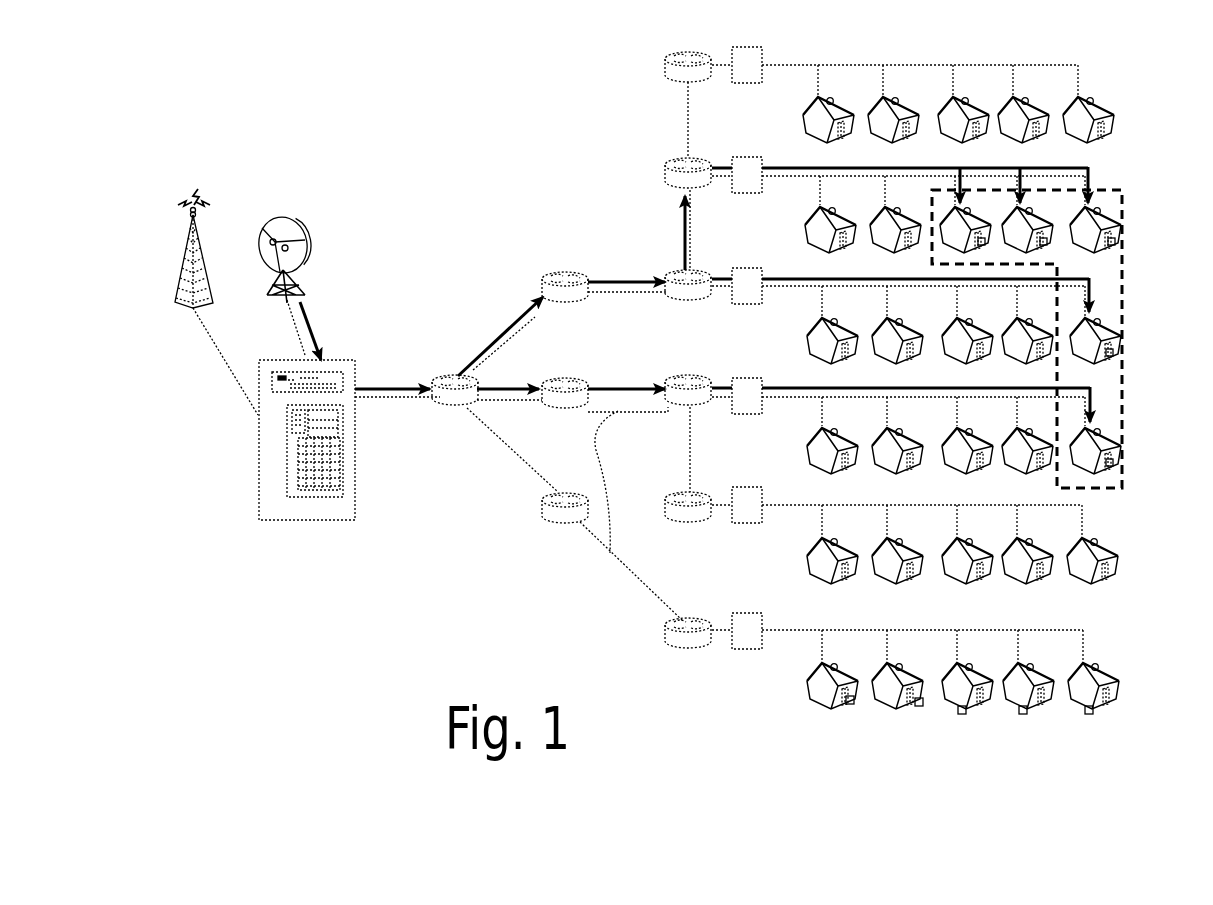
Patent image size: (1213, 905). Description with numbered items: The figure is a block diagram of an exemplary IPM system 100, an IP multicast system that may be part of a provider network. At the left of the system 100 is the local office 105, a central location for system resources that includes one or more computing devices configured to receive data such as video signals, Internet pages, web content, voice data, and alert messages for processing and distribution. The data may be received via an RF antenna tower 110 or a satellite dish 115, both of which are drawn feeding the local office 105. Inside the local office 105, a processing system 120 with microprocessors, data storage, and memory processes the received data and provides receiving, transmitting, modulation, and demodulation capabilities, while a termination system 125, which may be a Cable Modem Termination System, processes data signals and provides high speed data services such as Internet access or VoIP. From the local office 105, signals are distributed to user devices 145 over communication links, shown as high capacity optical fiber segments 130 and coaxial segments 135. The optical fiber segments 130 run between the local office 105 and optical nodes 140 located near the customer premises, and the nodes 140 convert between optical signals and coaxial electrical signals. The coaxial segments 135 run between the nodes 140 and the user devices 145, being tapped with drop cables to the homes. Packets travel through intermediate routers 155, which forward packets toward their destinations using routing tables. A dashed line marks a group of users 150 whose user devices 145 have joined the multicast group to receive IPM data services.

The IPM system 100 is at (342, 71).
The local office 105 is at (308, 518).
The RF antenna tower 110 is at (198, 194).
The satellite dish 115 is at (303, 233).
The processing system 120 is at (287, 465).
The termination system 125 is at (330, 372).
The optical fiber segments 130 is at (692, 450).
The coaxial segments 135 is at (798, 630).
The optical nodes 140 is at (742, 613).
The user devices 145 is at (1113, 466).
The group of users 150 is at (1124, 189).
The routers 155 is at (667, 630).